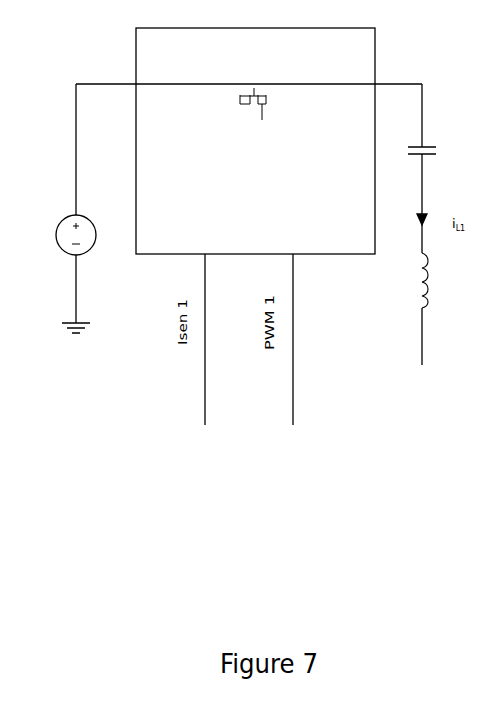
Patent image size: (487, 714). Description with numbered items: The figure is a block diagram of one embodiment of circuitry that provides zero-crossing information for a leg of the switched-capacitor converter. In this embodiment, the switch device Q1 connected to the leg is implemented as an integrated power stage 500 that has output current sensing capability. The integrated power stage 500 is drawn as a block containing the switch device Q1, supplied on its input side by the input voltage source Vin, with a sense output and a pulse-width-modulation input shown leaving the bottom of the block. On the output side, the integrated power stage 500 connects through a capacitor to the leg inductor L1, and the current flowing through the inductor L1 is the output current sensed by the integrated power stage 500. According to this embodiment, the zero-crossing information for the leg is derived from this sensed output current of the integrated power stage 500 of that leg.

The integrated power stage 500 is at (359, 238).
The switch device Q1 is at (274, 86).
The input voltage source Vin is at (85, 208).
The inductor L1 is at (441, 309).